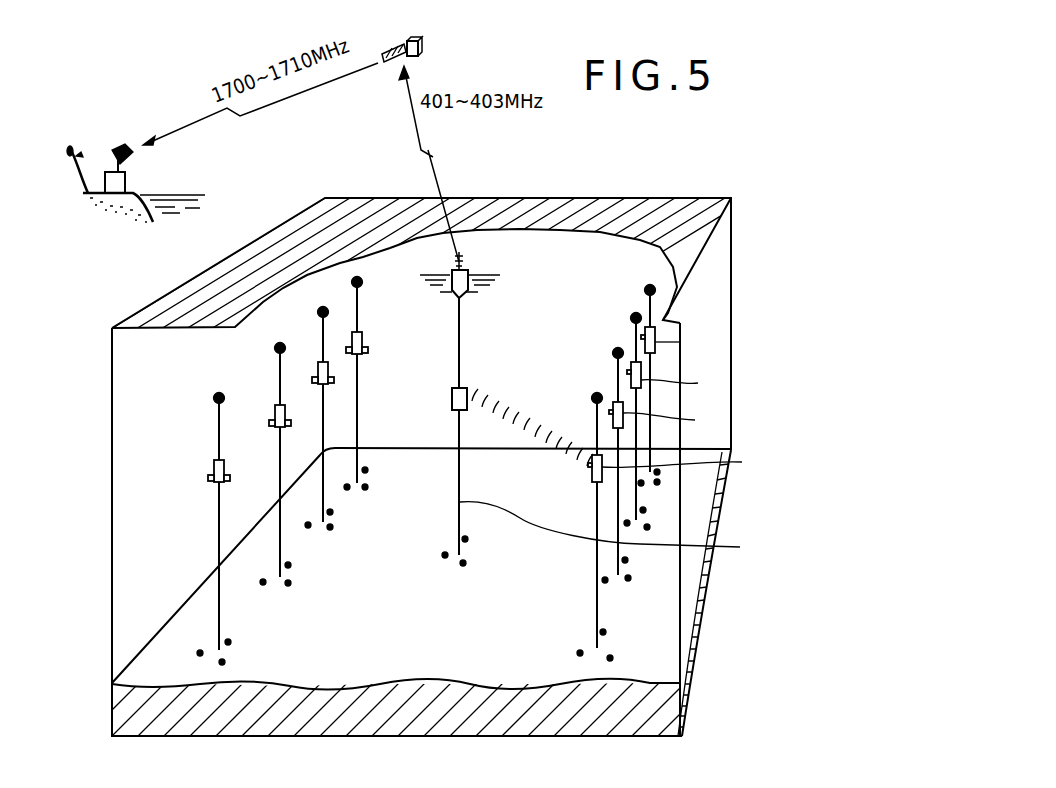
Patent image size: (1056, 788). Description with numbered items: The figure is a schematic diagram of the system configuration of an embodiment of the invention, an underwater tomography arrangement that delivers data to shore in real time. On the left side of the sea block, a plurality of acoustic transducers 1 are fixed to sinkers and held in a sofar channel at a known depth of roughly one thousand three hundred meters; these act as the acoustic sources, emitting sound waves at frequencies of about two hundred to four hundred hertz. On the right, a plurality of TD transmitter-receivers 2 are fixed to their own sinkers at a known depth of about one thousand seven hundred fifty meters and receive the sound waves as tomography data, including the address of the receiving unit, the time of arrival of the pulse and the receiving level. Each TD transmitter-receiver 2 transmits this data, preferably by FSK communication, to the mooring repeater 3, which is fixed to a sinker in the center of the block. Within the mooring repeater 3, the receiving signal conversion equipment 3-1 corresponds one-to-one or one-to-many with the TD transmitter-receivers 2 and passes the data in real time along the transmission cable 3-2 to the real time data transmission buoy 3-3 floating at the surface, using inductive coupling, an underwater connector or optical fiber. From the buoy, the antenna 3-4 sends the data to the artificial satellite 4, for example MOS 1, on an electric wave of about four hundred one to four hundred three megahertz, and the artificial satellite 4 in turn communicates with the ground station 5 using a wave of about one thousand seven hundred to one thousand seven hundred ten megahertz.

The acoustic transducer 1 is at (378, 328).
The TD transmitter-receiver 2 is at (697, 316).
The mooring repeater 3 is at (443, 538).
The receiving signal conversion equipment 3-1 is at (467, 393).
The transmission cable 3-2 is at (731, 452).
The real time data transmission buoy 3-3 is at (468, 280).
The antenna 3-4 is at (476, 258).
The artificial satellite 4 is at (420, 50).
The ground station 5 is at (120, 148).